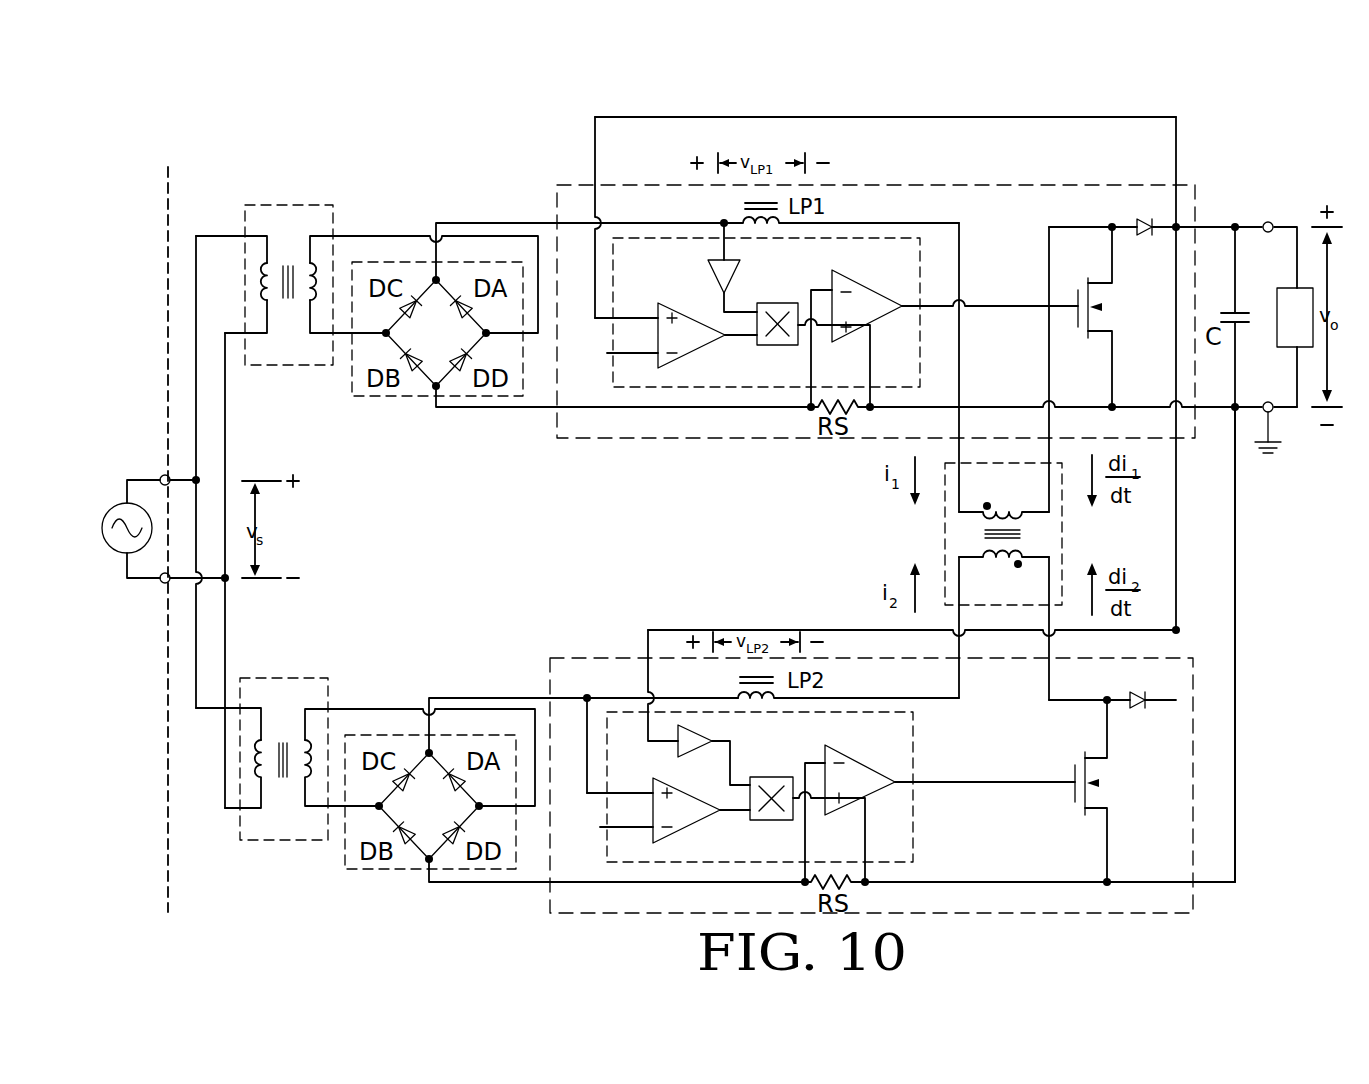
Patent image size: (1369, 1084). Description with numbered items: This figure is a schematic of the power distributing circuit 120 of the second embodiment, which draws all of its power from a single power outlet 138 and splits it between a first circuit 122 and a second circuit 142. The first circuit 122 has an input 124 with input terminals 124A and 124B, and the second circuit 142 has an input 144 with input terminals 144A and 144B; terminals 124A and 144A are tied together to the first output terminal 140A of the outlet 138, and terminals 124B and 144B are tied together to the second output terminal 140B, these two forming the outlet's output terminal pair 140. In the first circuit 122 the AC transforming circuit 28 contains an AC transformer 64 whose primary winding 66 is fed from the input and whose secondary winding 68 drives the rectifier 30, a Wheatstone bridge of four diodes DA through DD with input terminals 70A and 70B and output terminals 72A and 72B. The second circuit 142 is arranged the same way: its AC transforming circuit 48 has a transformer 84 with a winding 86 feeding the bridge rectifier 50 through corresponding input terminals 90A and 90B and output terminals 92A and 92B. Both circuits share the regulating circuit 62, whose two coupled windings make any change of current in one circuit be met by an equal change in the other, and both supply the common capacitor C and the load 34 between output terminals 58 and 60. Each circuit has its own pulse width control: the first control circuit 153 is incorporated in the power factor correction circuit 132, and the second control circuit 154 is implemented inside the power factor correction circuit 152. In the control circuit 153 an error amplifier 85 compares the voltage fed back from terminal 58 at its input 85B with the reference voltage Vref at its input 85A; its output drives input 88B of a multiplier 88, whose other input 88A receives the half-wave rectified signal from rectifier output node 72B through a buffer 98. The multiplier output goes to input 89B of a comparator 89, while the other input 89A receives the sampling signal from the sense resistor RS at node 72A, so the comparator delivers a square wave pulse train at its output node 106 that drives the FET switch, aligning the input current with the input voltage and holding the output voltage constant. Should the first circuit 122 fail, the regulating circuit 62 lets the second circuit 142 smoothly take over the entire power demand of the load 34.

The power distributing circuit 120 is at (1272, 830).
The first circuit 122 is at (1256, 486).
The input 124 is at (193, 211).
The input terminal 124A is at (227, 236).
The input terminal 124B is at (233, 333).
The AC transforming circuit 28 is at (318, 366).
The primary winding 66 is at (272, 263).
The secondary winding 68 is at (313, 262).
The AC transformer 64 is at (293, 300).
The rectifier 30 is at (410, 396).
The rectifier input terminal 70A is at (343, 336).
The rectifier input terminal 70B is at (538, 340).
The rectifier output terminal 72A is at (450, 407).
The rectifier output node 72B is at (457, 223).
The power factor correction circuit 132 is at (918, 185).
The first control circuit 153 is at (922, 283).
The error amplifier 85 is at (658, 340).
The error amplifier input 85A is at (638, 318).
The error amplifier input 85B is at (658, 362).
The buffer 98 is at (712, 275).
The multiplier 88 is at (305, 740).
The multiplier input 88A is at (735, 314).
The multiplier input 88B is at (750, 340).
The comparator 89 is at (860, 282).
The comparator input 89A is at (811, 290).
The comparator input 89B is at (825, 345).
The comparator output node 106 is at (905, 300).
The regulating circuit 62 is at (1062, 530).
The first output terminal 58 is at (1268, 222).
The second output terminal 60 is at (1271, 413).
The load 34 is at (1277, 330).
The AC power source 140 is at (113, 404).
The first output terminal of power outlet 140A is at (163, 476).
The second output terminal of power outlet 140B is at (162, 584).
The power outlet 138 is at (118, 506).
The second circuit 142 is at (1258, 656).
The input 144 is at (180, 777).
The input terminal 144A is at (203, 708).
The input terminal 144B is at (228, 810).
The AC transforming circuit 48 is at (258, 841).
The primary winding 86 is at (264, 740).
The transformer 84 is at (283, 778).
The rectifier 50 is at (400, 871).
The rectifier input terminal 90A is at (340, 808).
The rectifier input terminal 90B is at (527, 810).
The rectifier output terminal 92A is at (438, 882).
The rectifier output terminal 92B is at (455, 698).
The power factor correction circuit 152 is at (1020, 917).
The second control circuit 154 is at (913, 823).